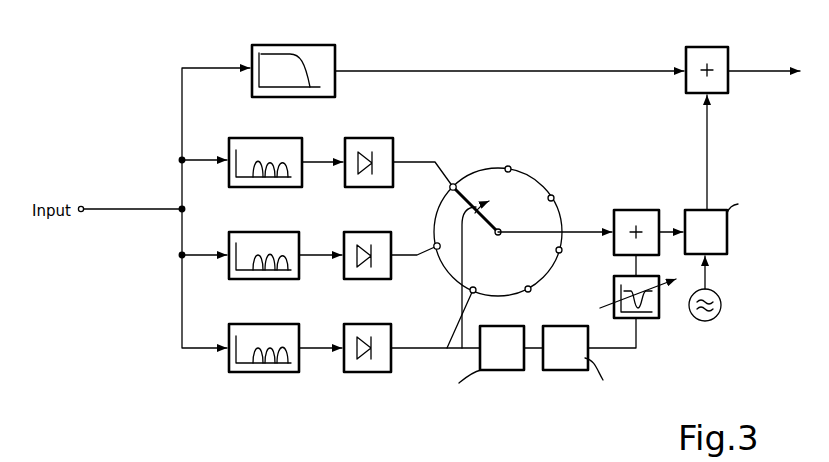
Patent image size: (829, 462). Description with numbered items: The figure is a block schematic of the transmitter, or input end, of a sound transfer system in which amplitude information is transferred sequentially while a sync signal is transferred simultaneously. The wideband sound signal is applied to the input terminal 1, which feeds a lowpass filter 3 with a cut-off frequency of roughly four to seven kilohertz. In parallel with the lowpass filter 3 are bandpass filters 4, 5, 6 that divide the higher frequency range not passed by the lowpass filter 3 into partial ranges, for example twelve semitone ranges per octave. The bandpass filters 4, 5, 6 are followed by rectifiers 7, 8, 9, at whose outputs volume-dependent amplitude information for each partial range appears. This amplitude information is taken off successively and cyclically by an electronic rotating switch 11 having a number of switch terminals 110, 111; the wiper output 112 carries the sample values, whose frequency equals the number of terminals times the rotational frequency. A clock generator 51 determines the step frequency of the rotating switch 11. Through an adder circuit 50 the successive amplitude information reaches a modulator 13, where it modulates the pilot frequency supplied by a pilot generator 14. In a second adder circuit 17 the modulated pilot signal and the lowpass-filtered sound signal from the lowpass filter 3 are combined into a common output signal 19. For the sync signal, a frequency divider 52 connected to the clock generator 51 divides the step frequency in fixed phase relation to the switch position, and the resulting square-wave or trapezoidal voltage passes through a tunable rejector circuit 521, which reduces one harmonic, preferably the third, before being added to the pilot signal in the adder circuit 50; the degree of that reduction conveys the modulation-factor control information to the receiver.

The input terminal 1 is at (128, 197).
The lowpass filter 3 is at (300, 45).
The bandpass filter 4 is at (266, 141).
The bandpass filter 5 is at (270, 234).
The bandpass filter 6 is at (266, 327).
The rectifier 7 is at (368, 141).
The rectifier 8 is at (369, 234).
The rectifier 9 is at (369, 327).
The rotating switch 11 is at (497, 277).
The switch terminal 110 is at (436, 250).
The switch contact 111 is at (467, 193).
The switch output line 112 is at (575, 235).
The adder circuit 50 is at (637, 210).
The modulator 13 is at (720, 232).
The pilot generator 14 is at (722, 305).
The adder circuit 17 is at (703, 47).
The output signal 19 is at (755, 70).
The tunable rejector circuit 521 is at (652, 318).
The clock generator 51 is at (503, 360).
The frequency divider 52 is at (570, 360).